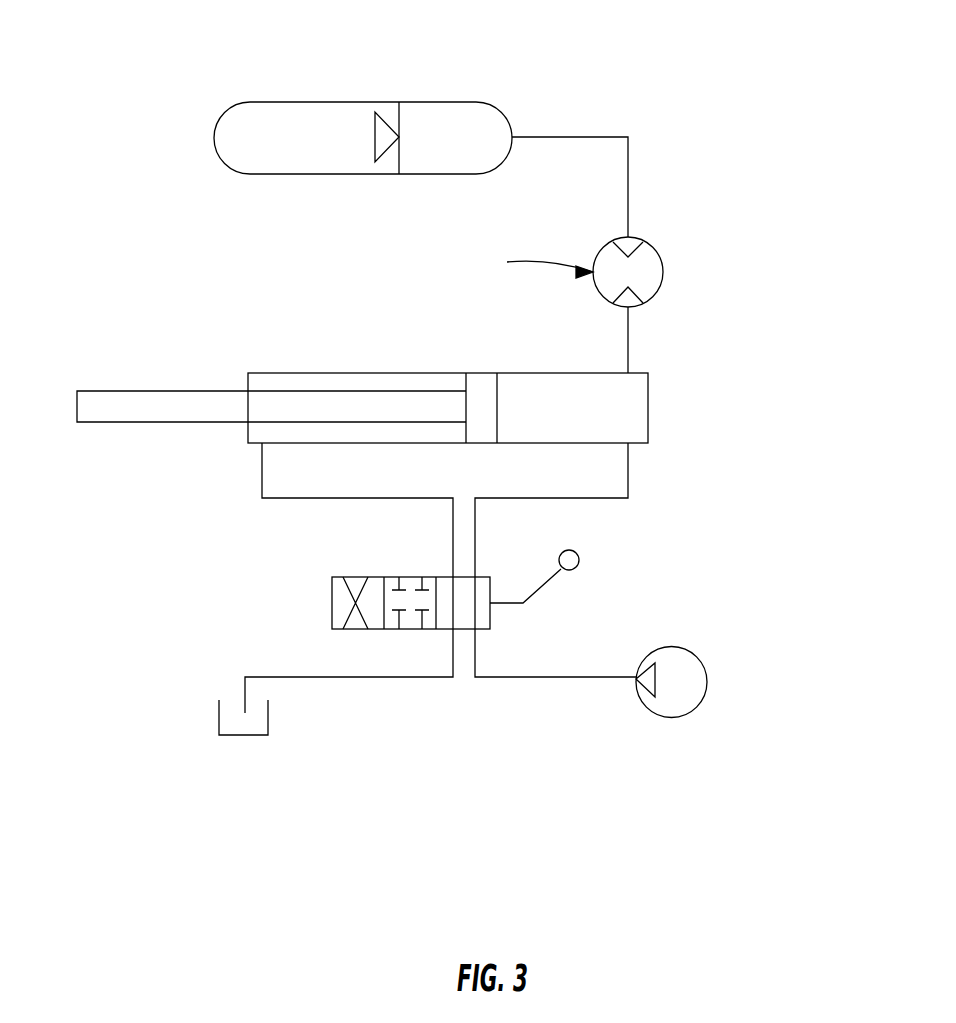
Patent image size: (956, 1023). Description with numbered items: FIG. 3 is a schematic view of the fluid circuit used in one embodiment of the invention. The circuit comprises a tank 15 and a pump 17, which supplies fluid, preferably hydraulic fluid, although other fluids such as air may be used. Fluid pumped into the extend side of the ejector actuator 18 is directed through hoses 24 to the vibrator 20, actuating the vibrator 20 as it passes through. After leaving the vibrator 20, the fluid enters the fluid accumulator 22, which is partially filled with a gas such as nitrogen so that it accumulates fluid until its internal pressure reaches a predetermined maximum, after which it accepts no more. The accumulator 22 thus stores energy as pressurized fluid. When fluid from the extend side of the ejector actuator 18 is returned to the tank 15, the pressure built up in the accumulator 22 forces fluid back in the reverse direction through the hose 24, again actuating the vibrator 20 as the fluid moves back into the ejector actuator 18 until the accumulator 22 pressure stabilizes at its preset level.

The tank 15 is at (242, 735).
The pump 17 is at (693, 693).
The ejector actuator 18 is at (630, 412).
The vibrator 20 is at (652, 278).
The fluid accumulator 22 is at (343, 102).
The hoses 24 is at (628, 180).